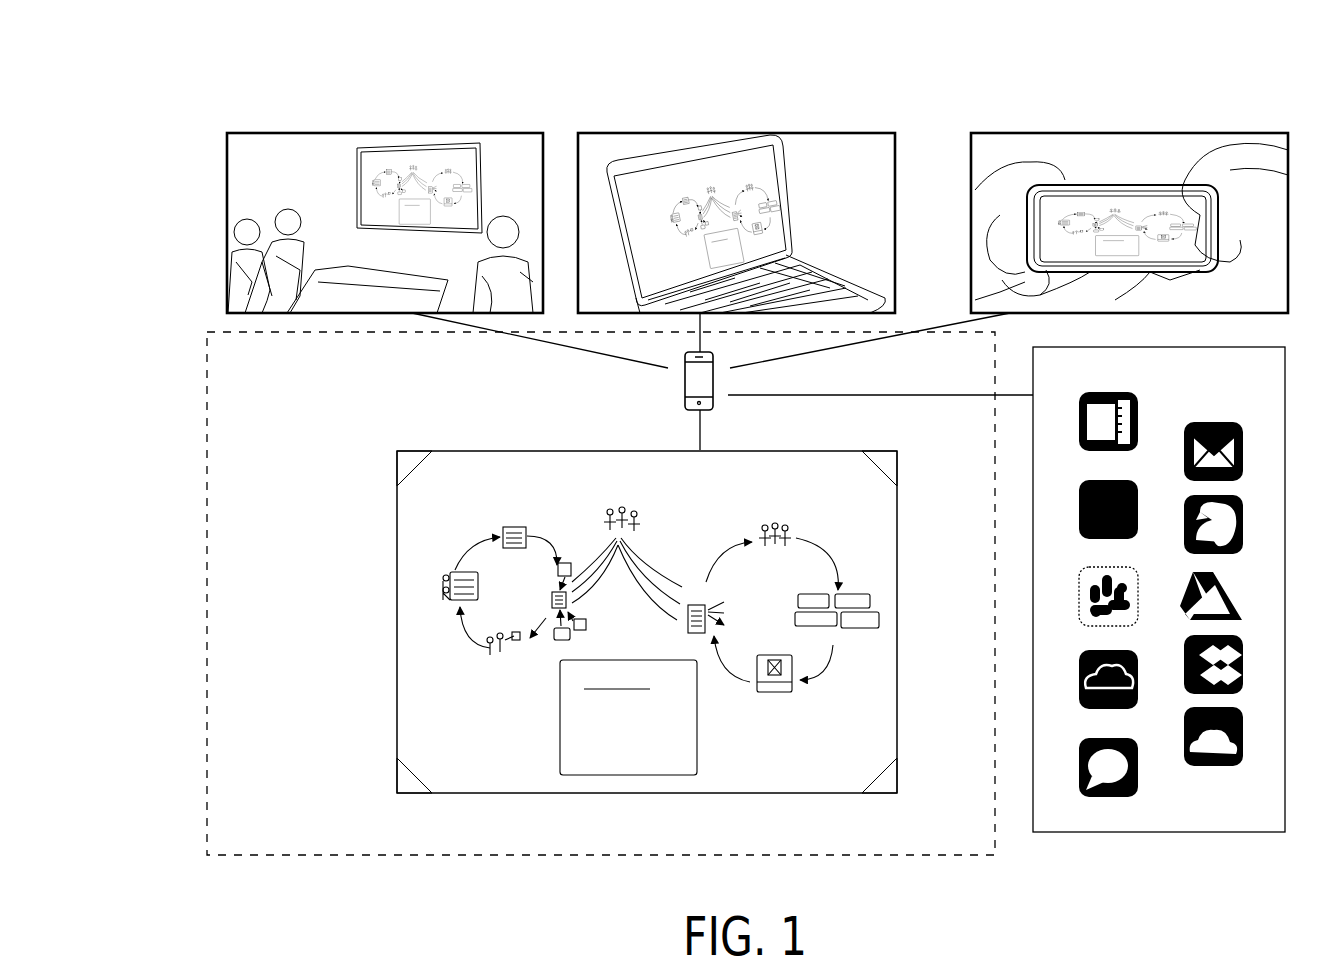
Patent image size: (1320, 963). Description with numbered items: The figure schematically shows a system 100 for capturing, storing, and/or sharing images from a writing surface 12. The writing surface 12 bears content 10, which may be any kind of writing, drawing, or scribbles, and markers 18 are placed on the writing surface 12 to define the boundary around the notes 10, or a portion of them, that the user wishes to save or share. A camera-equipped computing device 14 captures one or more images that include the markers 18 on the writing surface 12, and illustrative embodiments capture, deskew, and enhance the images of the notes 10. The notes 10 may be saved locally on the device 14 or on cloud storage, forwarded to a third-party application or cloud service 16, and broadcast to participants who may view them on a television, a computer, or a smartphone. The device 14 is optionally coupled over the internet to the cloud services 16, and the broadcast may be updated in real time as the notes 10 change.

The system 100 is at (206, 477).
The camera-equipped computing device 14 is at (675, 395).
The markers 18 is at (406, 450).
The content 10 is at (414, 597).
The writing surface 12 is at (465, 672).
The third-party cloud services 16 is at (1232, 403).